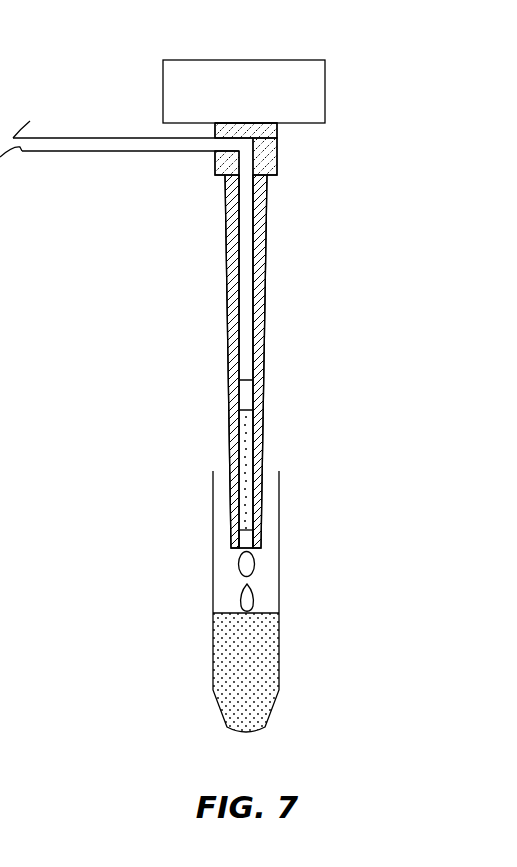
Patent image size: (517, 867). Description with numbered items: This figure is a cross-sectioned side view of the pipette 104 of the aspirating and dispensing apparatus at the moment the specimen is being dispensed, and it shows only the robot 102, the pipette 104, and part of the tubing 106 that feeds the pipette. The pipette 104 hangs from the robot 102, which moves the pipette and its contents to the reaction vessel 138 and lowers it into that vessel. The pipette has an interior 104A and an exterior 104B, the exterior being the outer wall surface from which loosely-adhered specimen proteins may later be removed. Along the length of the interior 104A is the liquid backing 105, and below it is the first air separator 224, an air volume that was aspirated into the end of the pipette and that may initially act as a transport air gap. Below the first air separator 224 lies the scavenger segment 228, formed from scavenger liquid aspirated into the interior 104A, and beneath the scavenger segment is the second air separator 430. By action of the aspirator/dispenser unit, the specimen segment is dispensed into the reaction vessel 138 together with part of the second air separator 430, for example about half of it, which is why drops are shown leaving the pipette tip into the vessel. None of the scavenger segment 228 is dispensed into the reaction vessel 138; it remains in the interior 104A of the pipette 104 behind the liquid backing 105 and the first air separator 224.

The robot 102 is at (283, 60).
The tubing 106 is at (103, 152).
The pipette 104 is at (231, 335).
The exterior of the pipette 104B is at (226, 238).
The interior of the pipette 104A is at (239, 317).
The liquid backing 105 is at (245, 358).
The first air separator 224 is at (254, 395).
The scavenger segment 228 is at (247, 445).
The second air separator 430 is at (240, 540).
The reaction vessel 138 is at (284, 455).